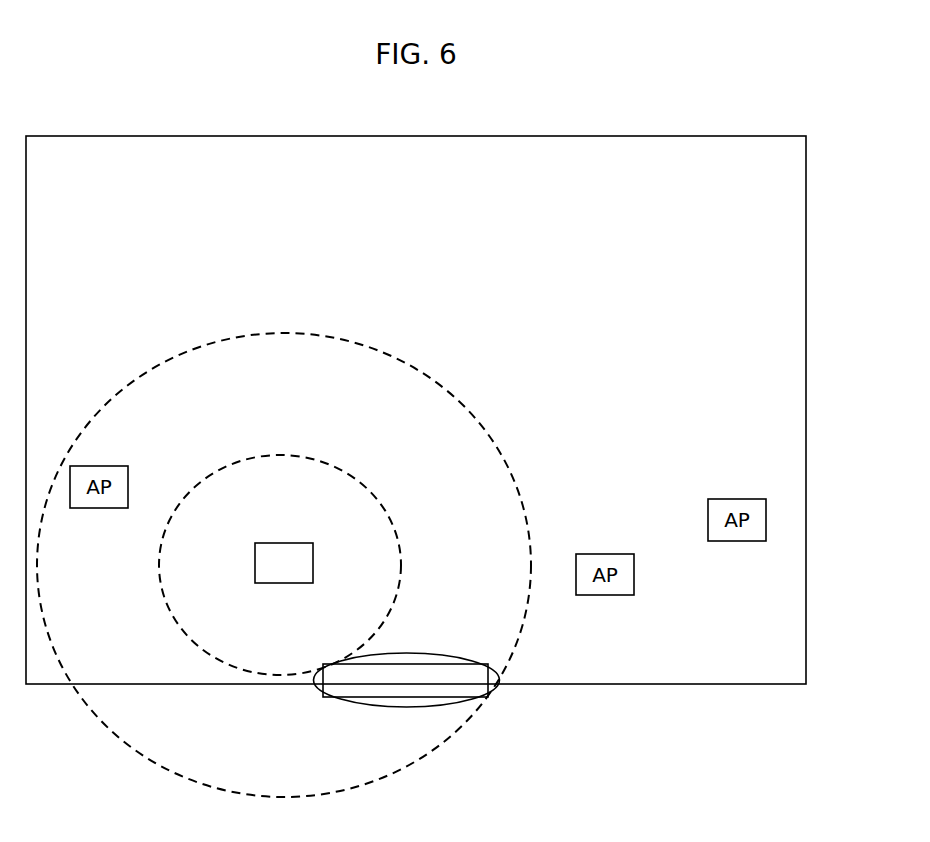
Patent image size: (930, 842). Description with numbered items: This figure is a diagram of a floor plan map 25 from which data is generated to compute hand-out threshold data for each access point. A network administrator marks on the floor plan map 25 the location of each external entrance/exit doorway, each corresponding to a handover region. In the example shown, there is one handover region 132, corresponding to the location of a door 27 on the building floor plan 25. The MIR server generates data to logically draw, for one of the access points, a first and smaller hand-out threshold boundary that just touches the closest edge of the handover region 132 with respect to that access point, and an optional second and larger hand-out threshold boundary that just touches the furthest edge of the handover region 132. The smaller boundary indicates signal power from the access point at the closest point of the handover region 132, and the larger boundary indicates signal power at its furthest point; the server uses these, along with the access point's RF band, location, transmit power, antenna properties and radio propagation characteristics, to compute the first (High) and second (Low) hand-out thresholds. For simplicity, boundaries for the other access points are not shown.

The floor plan map 25 is at (103, 136).
The door 27 is at (405, 680).
The handover region 132 is at (378, 707).